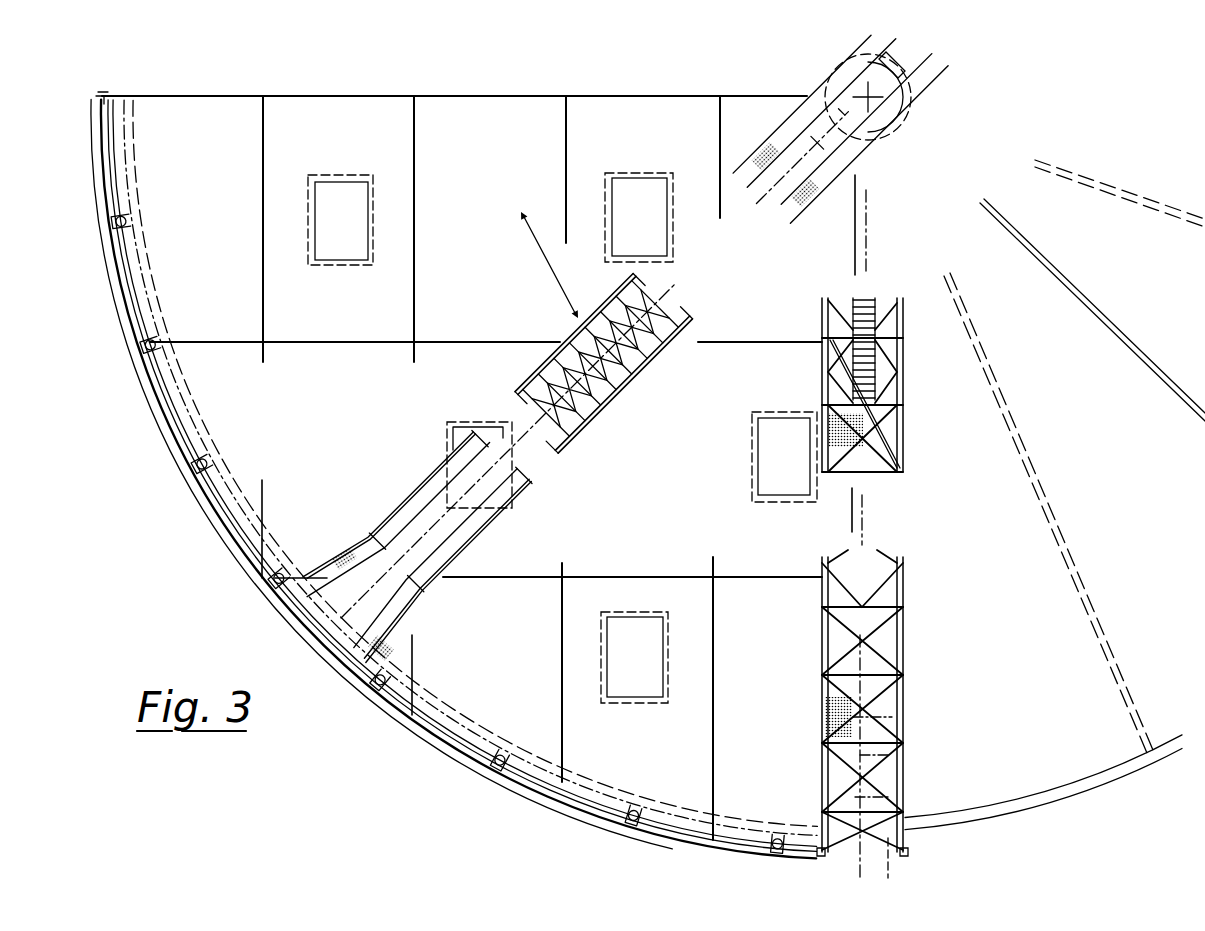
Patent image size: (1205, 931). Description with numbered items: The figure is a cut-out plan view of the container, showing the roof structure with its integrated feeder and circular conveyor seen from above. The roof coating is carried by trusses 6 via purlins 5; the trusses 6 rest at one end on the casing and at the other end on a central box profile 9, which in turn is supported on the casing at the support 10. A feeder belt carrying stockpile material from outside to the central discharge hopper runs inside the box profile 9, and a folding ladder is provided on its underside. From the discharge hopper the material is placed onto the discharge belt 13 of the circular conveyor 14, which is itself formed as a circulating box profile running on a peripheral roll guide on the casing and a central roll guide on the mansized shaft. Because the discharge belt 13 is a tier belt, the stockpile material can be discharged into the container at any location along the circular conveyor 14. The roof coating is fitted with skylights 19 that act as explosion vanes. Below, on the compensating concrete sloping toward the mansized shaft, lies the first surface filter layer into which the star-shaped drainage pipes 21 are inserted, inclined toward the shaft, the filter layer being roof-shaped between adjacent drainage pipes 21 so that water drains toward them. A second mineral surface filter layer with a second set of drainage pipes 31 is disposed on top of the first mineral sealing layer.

The purlins 5 is at (265, 265).
The trusses 6 is at (440, 343).
The central box profile 9 is at (900, 587).
The support of the box profile on the casing 10 is at (883, 667).
The discharge belt 13 is at (428, 528).
The circular conveyor 14 is at (667, 347).
The skylights 19 is at (653, 645).
The drainage pipes 21 is at (1093, 183).
The second set of drainage pipes 31 is at (1157, 360).